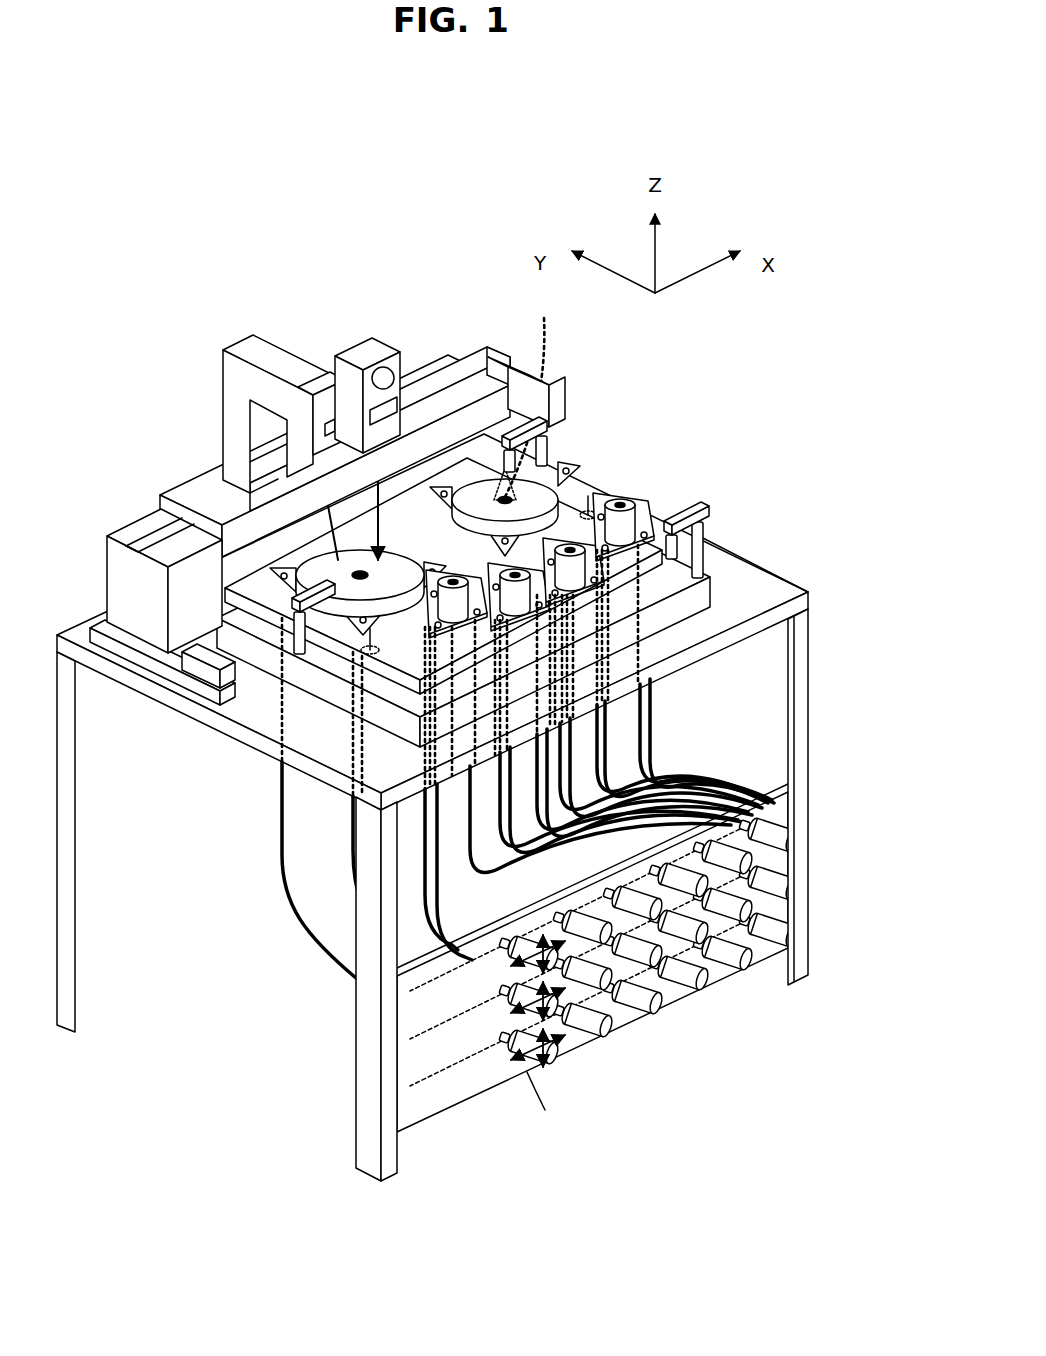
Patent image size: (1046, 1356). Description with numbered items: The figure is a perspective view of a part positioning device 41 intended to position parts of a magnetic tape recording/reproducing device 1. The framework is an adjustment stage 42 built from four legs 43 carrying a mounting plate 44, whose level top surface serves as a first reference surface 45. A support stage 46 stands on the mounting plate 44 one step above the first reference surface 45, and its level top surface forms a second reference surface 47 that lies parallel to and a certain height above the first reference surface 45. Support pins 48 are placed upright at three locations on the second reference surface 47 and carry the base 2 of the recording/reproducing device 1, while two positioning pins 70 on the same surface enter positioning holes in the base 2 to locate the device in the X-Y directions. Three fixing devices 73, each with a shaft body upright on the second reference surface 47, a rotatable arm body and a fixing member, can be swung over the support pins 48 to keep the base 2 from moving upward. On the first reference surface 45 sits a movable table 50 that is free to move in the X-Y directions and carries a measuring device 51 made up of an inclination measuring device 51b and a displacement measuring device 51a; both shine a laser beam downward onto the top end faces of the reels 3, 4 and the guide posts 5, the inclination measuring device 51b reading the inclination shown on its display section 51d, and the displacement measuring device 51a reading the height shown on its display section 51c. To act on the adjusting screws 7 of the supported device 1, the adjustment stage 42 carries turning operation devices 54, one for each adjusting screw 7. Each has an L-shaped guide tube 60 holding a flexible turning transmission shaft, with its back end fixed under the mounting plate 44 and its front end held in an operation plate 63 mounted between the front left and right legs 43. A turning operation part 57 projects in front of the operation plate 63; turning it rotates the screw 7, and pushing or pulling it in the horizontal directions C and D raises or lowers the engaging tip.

The magnetic tape recording/reproducing device 1 is at (503, 570).
The base 2 is at (667, 517).
The reel 3 is at (318, 568).
The reel 4 is at (548, 486).
The guide post 5 is at (622, 500).
The adjusting screw 7 is at (270, 571).
The part positioning device 41 is at (336, 380).
The adjustment stage 42 is at (477, 622).
The leg 43 is at (811, 676).
The mounting plate 44 is at (123, 700).
The first reference surface 45 is at (783, 596).
The support stage 46 is at (657, 627).
The second reference surface 47 is at (757, 586).
The support pin 48 is at (316, 812).
The movable table 50 is at (122, 512).
The measuring device 51 is at (361, 357).
The displacement measuring device 51a is at (323, 387).
The inclination measuring device 51b is at (385, 352).
The display section 51c is at (300, 390).
The display section 51d is at (402, 388).
The turning operation device 54 is at (652, 772).
The turning operation part 57 is at (797, 937).
The guide tube 60 is at (491, 828).
The operation plate 63 is at (447, 1090).
The positioning pin 70 is at (585, 505).
The fixing device 73 is at (542, 418).